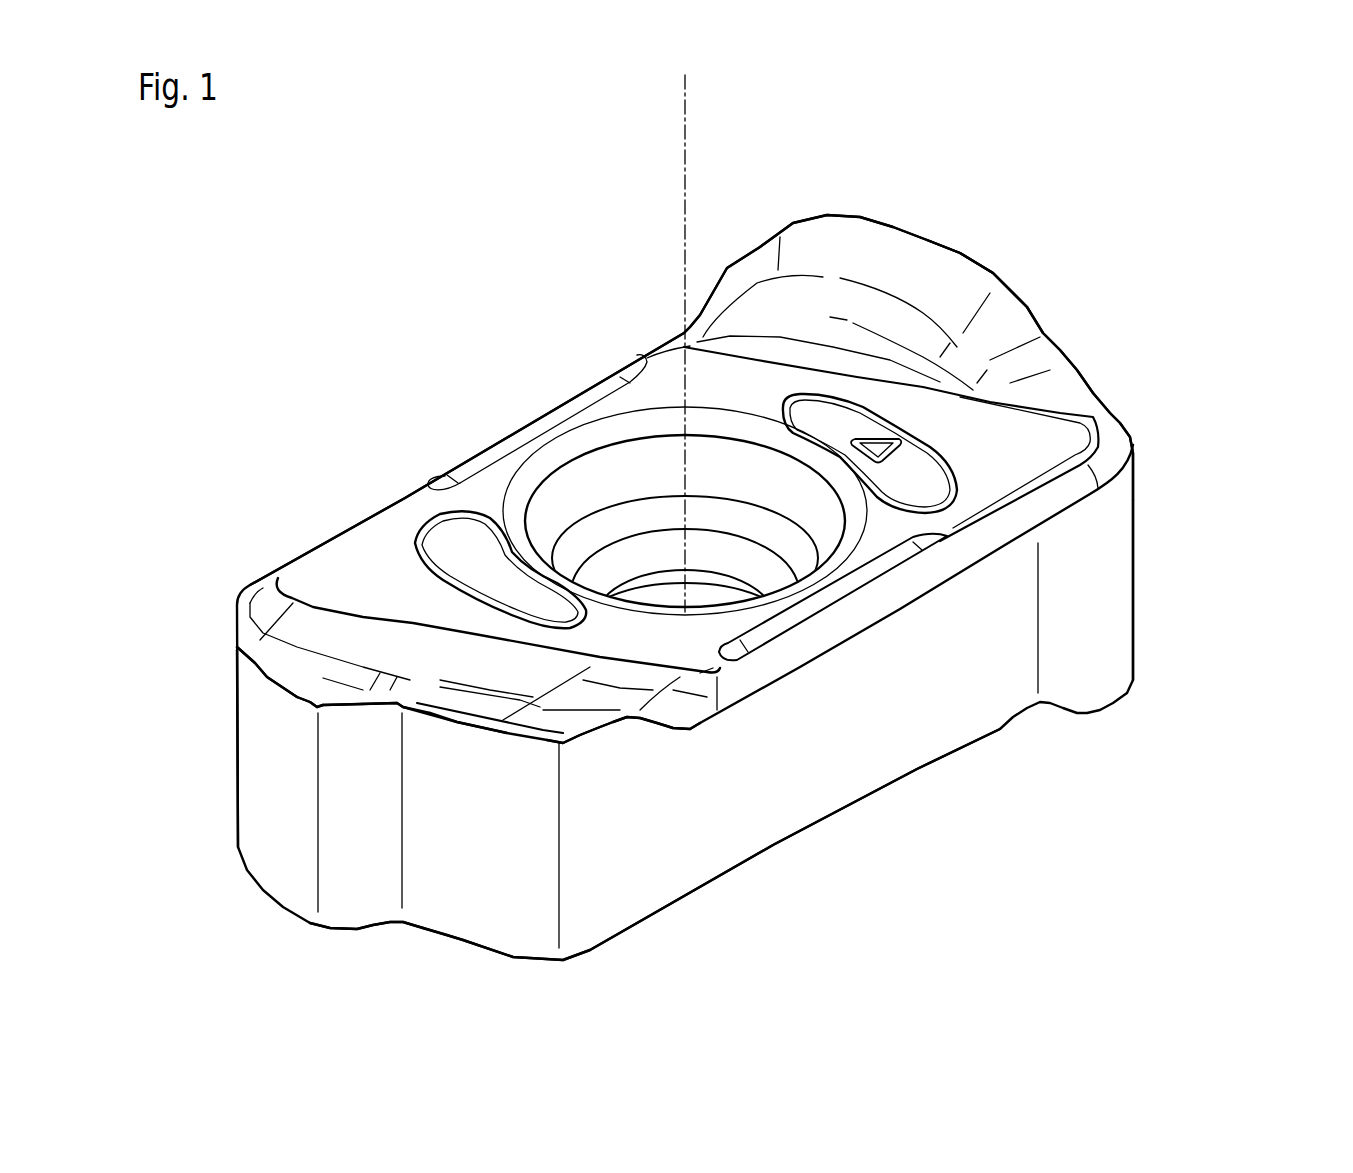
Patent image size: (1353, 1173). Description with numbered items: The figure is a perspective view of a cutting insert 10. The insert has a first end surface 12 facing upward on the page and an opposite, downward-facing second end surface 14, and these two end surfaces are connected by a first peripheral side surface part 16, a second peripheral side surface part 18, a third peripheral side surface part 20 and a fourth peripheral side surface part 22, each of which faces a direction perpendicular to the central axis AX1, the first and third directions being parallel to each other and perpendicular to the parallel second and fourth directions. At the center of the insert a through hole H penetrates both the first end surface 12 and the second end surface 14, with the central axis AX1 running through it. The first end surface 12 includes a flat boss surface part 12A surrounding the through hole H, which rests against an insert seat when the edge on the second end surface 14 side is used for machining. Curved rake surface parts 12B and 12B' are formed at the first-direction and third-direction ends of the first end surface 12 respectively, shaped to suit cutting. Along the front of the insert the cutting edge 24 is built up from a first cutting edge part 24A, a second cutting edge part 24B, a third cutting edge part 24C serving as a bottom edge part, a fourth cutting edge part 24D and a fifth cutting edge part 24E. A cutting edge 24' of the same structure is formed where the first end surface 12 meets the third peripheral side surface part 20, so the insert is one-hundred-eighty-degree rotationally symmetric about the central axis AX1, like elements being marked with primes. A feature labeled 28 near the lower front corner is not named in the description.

The cutting insert 10 is at (935, 880).
The first end surface 12 is at (411, 436).
The boss surface part 12A is at (488, 500).
The rake surface part 12B is at (702, 809).
The rake surface part 12B' is at (891, 340).
The second end surface 14 is at (651, 942).
The first peripheral side surface part 16 is at (460, 877).
The second peripheral side surface part 18 is at (887, 733).
The third peripheral side surface part 20 is at (1140, 428).
The fourth peripheral side surface part 22 is at (310, 540).
The cutting edge 24 is at (429, 699).
The second cutting edge 24' is at (1019, 265).
The first cutting edge part 24A is at (428, 717).
The second cutting edge part 24B is at (290, 693).
The third cutting edge part 24C is at (362, 708).
The fourth cutting edge part 24D is at (500, 737).
The fifth cutting edge part 24E is at (262, 668).
The corner edge 28 is at (373, 930).
The central axis AX1 is at (687, 162).
The through hole H is at (737, 468).